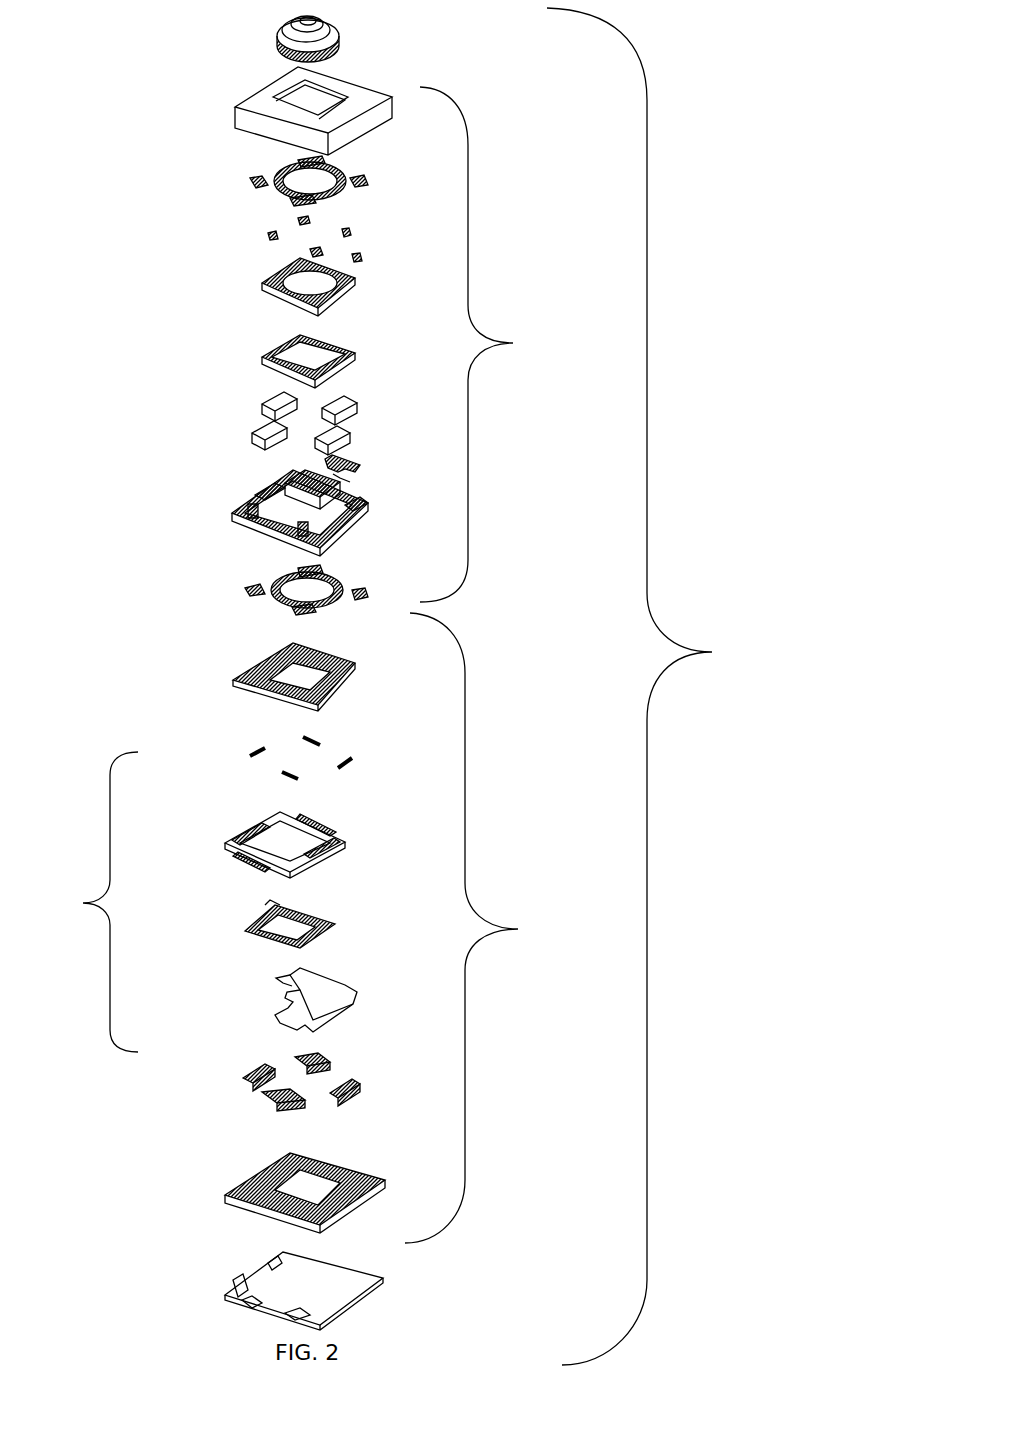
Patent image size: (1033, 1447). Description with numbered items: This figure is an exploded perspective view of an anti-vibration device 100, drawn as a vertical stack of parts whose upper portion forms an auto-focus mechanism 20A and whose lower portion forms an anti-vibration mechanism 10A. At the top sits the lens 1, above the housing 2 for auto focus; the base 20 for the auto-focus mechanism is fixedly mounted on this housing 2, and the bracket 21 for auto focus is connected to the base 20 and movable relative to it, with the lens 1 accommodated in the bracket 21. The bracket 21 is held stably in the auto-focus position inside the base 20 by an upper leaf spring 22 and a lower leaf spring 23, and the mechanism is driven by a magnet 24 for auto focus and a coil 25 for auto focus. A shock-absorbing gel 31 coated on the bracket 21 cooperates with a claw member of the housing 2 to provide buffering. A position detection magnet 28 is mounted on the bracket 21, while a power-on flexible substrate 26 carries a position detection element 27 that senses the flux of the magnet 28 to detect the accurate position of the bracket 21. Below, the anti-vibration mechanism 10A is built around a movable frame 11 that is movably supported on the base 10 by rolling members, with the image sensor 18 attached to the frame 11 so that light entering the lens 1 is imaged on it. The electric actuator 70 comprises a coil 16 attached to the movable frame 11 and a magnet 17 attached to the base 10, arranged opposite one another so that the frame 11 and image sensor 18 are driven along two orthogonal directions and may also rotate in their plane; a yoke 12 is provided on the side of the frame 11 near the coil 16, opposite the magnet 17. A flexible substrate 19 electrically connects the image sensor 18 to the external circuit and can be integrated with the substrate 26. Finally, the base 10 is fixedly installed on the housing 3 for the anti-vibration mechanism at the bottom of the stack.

The anti-vibration device 100 is at (682, 686).
The auto-focus mechanism 20A is at (497, 344).
The anti-vibration mechanism 10A is at (489, 928).
The electric actuator 70 is at (95, 902).
The lens 1 is at (340, 45).
The housing for auto focus 2 is at (378, 110).
The upper leaf spring for auto focus 22 is at (362, 181).
The shock-absorbing gel for auto focus 31 is at (268, 237).
The position detection magnet for auto focus 28 is at (360, 258).
The bracket for auto focus 21 is at (262, 284).
The coil for auto focus 25 is at (355, 357).
The magnet for auto focus 24 is at (255, 433).
The power-on flexible substrate for auto focus 26 is at (360, 469).
The position detection element for auto focus 27 is at (335, 477).
The base for the auto-focus mechanism 20 is at (232, 514).
The lower leaf spring for auto focus 23 is at (248, 590).
The movable frame for the anti-vibration mechanism 11 is at (355, 677).
The yoke for the anti-vibration mechanism 12 is at (255, 750).
The coil for the anti-vibration mechanism 16 is at (238, 825).
The image sensor 18 is at (330, 936).
The flexible substrate for the anti-vibration mechanism 19 is at (357, 993).
The magnet for the anti-vibration mechanism 17 is at (245, 1073).
The base 10 is at (365, 1175).
The housing for the anti-vibration mechanism 3 is at (327, 1270).